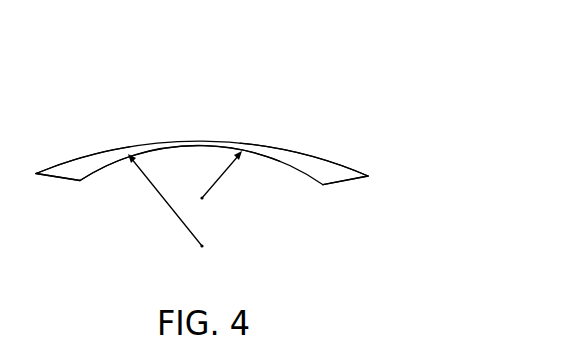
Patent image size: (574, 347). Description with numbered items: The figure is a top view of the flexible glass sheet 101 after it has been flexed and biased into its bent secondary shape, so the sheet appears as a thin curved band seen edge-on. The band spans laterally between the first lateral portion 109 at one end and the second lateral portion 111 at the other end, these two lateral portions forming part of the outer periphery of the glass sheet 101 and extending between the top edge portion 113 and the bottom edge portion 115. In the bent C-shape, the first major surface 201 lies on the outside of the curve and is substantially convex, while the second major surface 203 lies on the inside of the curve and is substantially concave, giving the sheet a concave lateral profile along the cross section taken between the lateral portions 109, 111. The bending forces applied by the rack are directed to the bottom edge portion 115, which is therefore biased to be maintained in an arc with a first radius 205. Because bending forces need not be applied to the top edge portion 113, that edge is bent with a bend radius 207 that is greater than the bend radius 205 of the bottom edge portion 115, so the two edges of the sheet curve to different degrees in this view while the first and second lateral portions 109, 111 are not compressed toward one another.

The flexible glass sheet 101 is at (352, 130).
The first lateral portion 109 is at (57, 178).
The second lateral portion 111 is at (347, 180).
The top edge portion 113 is at (67, 162).
The bottom edge portion 115 is at (192, 146).
The first major surface 201 is at (283, 152).
The second major surface 203 is at (105, 165).
The first radius 205 is at (219, 178).
The bend radius 207 is at (176, 214).